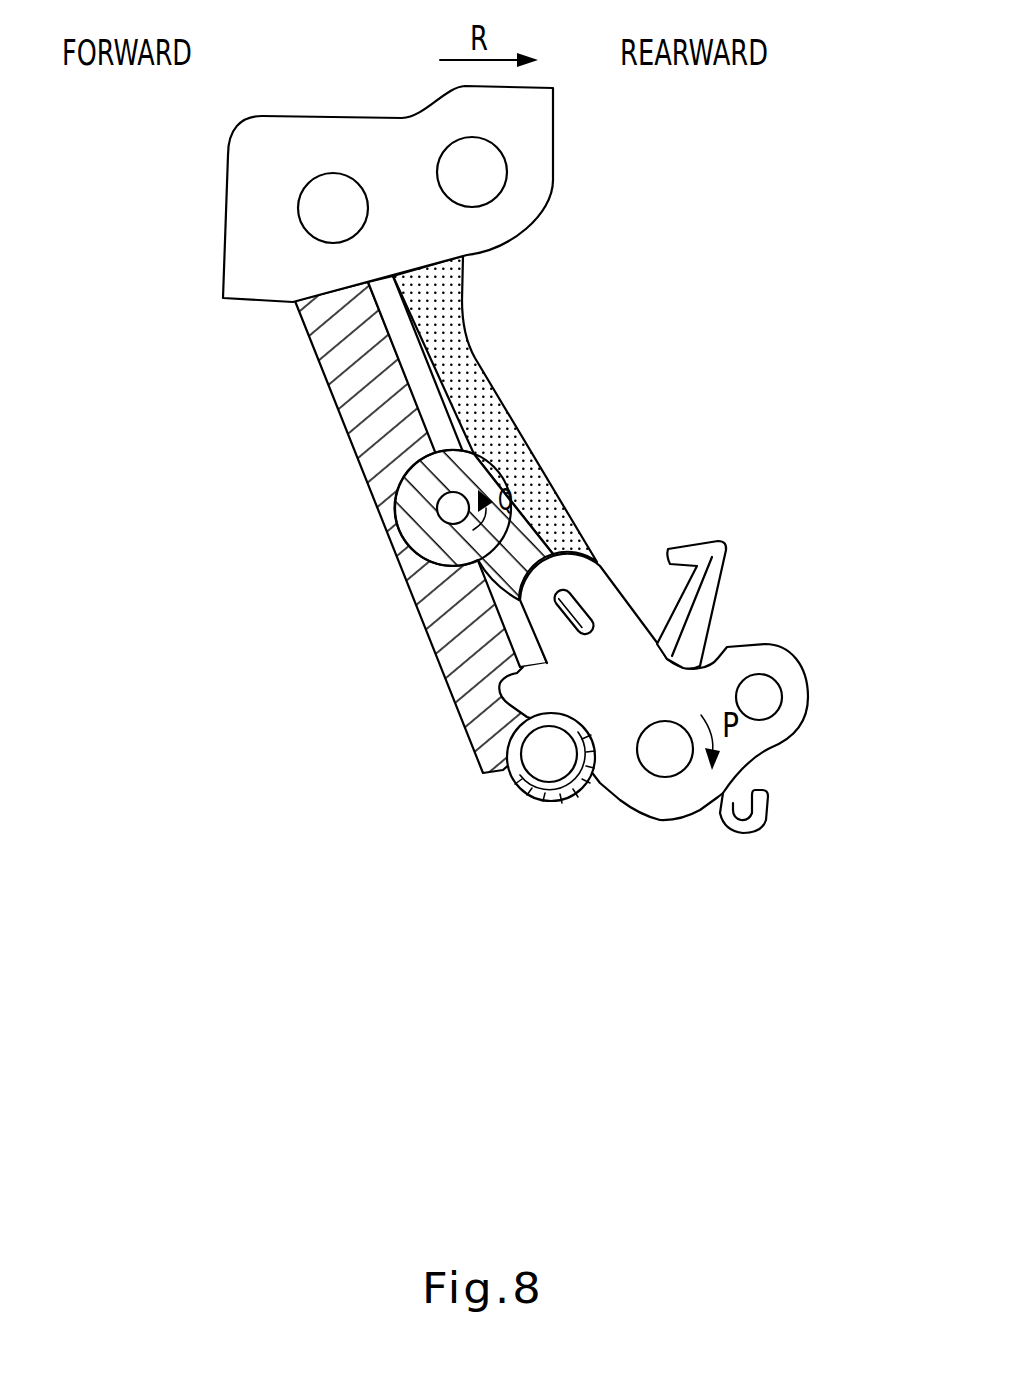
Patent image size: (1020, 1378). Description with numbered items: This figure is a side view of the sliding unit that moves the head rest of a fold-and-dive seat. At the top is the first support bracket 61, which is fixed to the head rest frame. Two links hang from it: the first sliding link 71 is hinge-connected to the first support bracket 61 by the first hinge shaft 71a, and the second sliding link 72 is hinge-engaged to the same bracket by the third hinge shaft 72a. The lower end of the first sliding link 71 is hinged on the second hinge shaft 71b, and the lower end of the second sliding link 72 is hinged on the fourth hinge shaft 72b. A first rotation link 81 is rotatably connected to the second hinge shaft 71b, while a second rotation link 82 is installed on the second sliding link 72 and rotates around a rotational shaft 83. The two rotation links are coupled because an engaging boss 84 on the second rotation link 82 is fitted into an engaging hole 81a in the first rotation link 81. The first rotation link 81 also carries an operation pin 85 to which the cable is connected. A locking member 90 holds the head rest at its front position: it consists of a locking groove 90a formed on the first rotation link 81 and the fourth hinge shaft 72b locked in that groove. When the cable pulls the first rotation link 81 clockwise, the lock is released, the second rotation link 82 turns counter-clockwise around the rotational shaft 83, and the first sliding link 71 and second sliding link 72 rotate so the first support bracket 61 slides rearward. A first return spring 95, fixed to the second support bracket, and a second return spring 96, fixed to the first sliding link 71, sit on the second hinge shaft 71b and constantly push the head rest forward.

The first support bracket 61 is at (242, 202).
The third hinge shaft 72a is at (333, 193).
The first hinge shaft 71a is at (500, 177).
The first sliding link 71 is at (480, 377).
The second sliding link 72 is at (352, 403).
The second rotation link 82 is at (517, 518).
The rotational shaft 83 is at (450, 507).
The engaging boss 84 is at (572, 610).
The engaging hole 81a is at (600, 596).
The first rotation link 81 is at (700, 677).
The operation pin 85 is at (773, 697).
The first return spring 95 is at (720, 552).
The second return spring 96 is at (755, 827).
The second hinge shaft 71b is at (664, 760).
The fourth hinge shaft 72b is at (546, 760).
The locking groove 90a is at (505, 776).
The locking member 90 is at (490, 849).